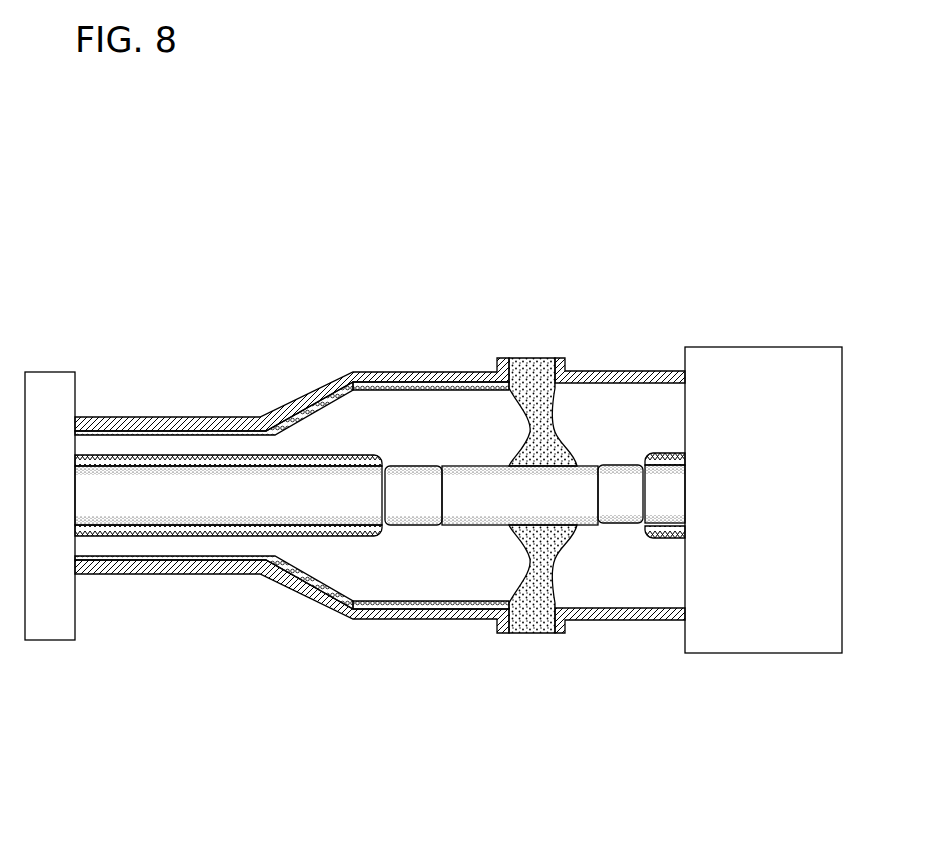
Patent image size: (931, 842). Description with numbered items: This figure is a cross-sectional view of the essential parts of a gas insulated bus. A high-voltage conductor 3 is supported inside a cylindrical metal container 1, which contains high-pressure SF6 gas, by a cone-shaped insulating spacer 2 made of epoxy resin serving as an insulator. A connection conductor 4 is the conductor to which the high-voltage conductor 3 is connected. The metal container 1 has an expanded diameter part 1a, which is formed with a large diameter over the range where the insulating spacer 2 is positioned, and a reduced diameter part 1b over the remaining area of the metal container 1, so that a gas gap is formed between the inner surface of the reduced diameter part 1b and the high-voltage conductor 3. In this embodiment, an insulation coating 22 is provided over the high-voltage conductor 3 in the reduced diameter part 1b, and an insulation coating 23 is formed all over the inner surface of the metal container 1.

The metal container 1 is at (380, 465).
The expanded diameter part 1a is at (407, 620).
The reduced diameter part 1b is at (167, 575).
The insulating spacer 2 is at (538, 372).
The high-voltage conductor 3 is at (172, 492).
The connection conductor 4 is at (410, 477).
The insulation coating 22 is at (252, 455).
The insulation coating 23 is at (348, 372).